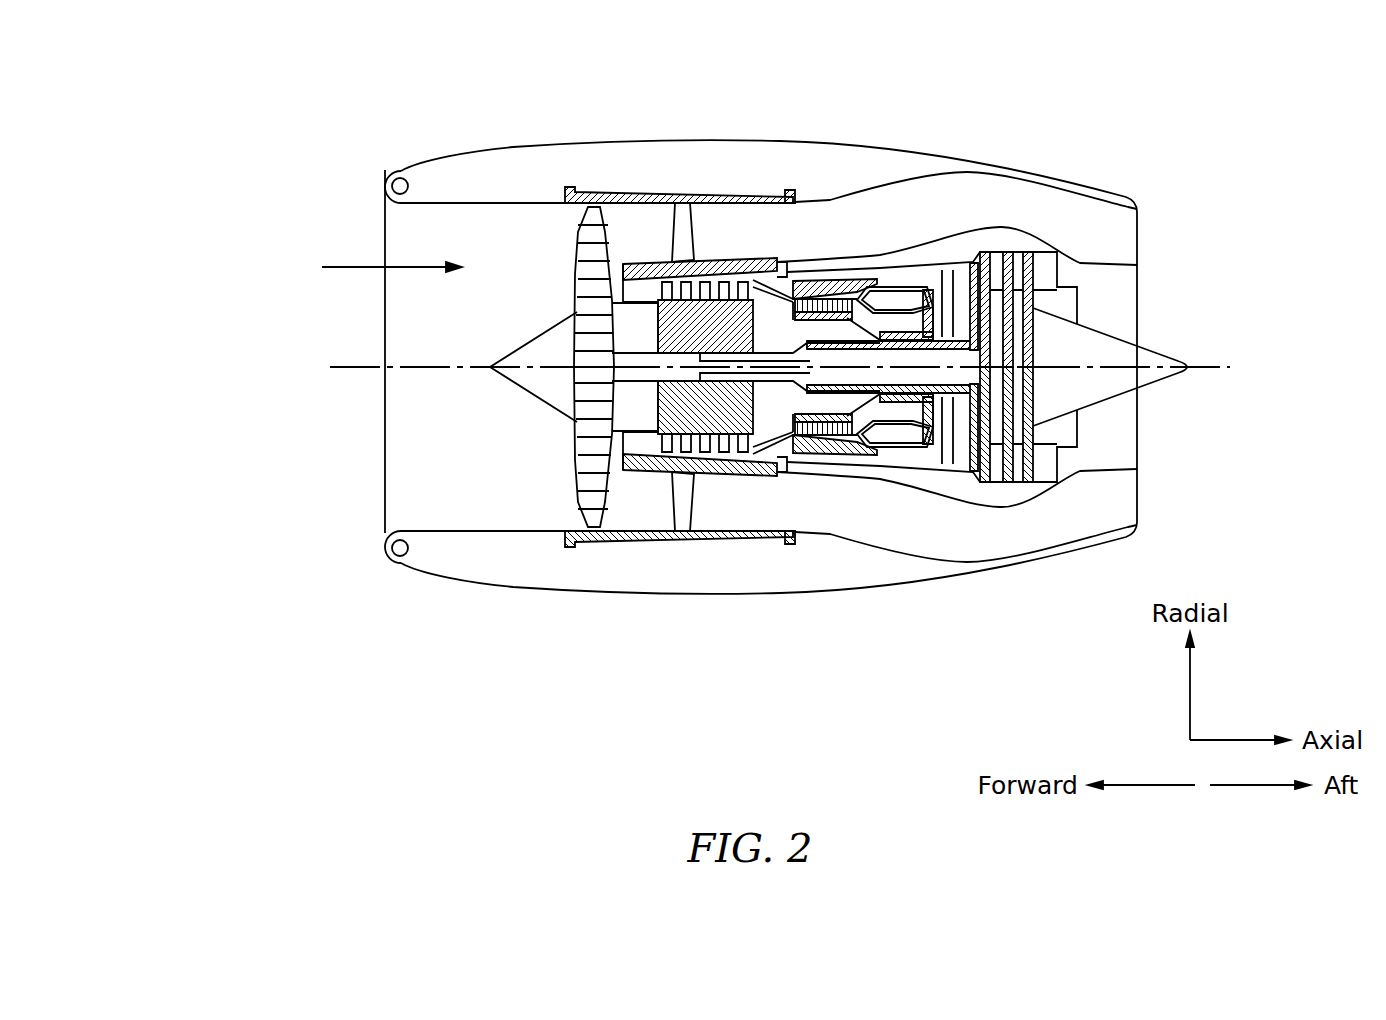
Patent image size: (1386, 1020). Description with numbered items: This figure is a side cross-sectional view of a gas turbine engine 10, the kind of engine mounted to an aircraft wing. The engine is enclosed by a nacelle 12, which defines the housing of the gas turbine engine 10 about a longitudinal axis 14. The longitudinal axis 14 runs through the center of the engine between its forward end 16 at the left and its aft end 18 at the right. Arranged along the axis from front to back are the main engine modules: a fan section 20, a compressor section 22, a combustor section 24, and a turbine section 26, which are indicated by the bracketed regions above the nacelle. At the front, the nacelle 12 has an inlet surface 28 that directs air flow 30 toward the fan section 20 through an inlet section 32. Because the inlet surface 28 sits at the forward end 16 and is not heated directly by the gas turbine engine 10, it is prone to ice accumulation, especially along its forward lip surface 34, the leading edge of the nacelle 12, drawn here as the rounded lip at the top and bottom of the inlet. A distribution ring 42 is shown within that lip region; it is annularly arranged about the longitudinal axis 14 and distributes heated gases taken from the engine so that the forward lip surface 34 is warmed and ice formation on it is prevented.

The gas turbine engine 10 is at (712, 382).
The nacelle 12 is at (820, 596).
The longitudinal axis 14 is at (338, 392).
The forward end 16 is at (205, 265).
The aft end 18 is at (1215, 428).
The fan section 20 is at (620, 116).
The compressor section 22 is at (847, 116).
The combustor section 24 is at (922, 116).
The turbine section 26 is at (922, 116).
The inlet surface 28 is at (488, 598).
The air flow 30 is at (348, 267).
The inlet section 32 is at (524, 437).
The forward lip surface 34 is at (387, 177).
The distribution ring 42 is at (416, 178).